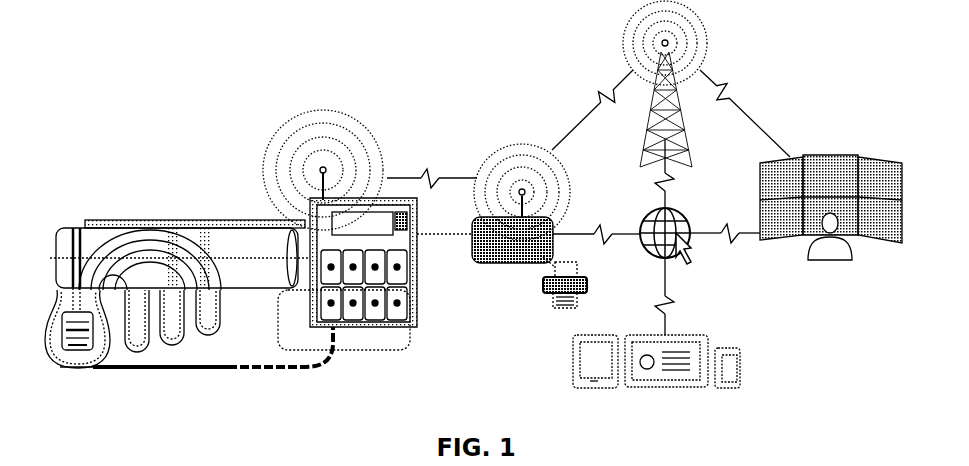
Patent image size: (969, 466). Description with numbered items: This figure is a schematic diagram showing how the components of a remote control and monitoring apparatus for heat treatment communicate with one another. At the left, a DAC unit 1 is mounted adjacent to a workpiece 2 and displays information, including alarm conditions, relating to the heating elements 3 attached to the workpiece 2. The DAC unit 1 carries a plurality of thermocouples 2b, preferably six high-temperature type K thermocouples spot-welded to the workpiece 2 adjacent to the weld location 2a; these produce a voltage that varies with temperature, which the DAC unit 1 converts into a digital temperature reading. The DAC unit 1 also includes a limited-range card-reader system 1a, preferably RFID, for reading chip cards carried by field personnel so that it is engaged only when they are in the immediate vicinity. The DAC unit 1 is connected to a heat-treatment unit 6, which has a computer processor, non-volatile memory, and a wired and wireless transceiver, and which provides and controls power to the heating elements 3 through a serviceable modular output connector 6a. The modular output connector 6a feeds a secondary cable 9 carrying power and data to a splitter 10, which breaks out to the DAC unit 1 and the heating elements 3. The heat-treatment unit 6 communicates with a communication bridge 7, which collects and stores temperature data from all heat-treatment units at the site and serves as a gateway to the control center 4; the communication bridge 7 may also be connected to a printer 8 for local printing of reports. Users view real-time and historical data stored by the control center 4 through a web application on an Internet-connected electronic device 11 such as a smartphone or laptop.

The DAC unit 1 is at (63, 355).
The card-reader system 1a is at (63, 323).
The workpiece 2 is at (98, 228).
The weld location 2a is at (168, 208).
The thermocouples 2b is at (165, 255).
The heating elements 3 is at (210, 290).
The control center 4 is at (862, 157).
The heat-treatment unit 6 is at (310, 212).
The modular output connector 6a is at (393, 312).
The communication bridge 7 is at (480, 217).
The printer 8 is at (543, 282).
The secondary cable 9 is at (298, 368).
The splitter 10 is at (200, 369).
The Internet-connected electronic device 11 is at (605, 387).